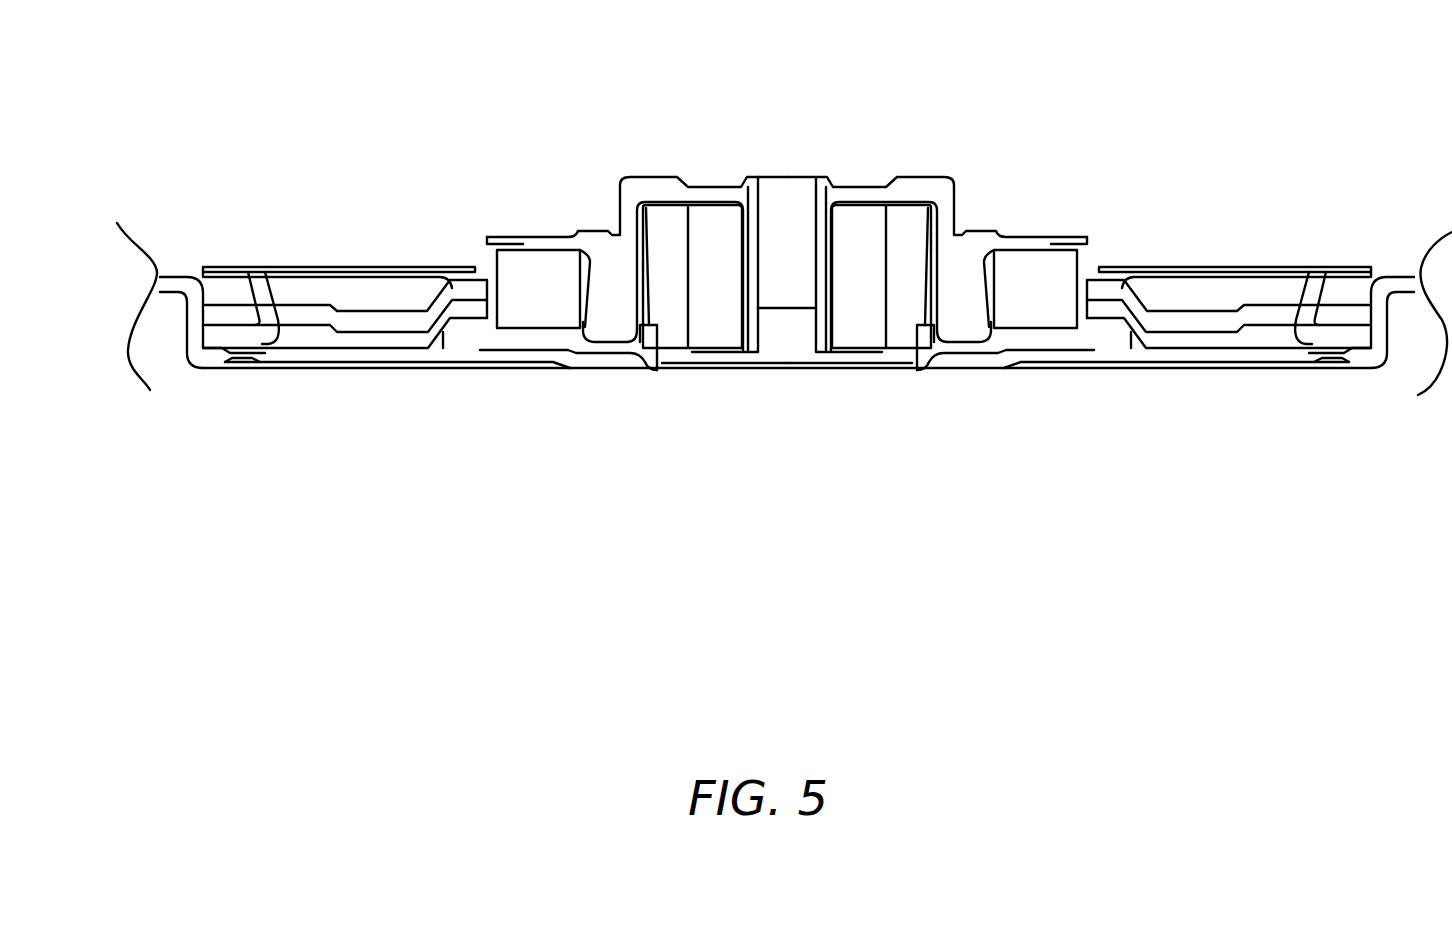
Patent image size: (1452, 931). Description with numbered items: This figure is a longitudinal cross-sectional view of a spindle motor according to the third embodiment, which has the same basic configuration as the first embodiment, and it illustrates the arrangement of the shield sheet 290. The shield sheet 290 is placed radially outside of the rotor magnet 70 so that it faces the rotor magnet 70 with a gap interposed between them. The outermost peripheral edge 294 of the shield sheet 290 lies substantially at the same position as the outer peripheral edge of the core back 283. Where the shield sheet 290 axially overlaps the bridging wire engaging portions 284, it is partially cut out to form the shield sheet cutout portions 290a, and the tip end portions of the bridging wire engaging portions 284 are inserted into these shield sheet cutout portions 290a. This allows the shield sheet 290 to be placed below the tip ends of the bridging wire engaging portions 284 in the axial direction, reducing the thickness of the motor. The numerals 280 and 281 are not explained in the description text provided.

The rotor magnet 70 is at (1010, 312).
The housing 280 is at (1120, 332).
The bottom plate 281 is at (385, 332).
The core back 283 is at (222, 317).
The bridging wire engaging portion 284 is at (265, 307).
The shield sheet 290 is at (1190, 267).
The shield sheet cutout portion 290a is at (262, 303).
The outermost peripheral edge 294 is at (1372, 270).